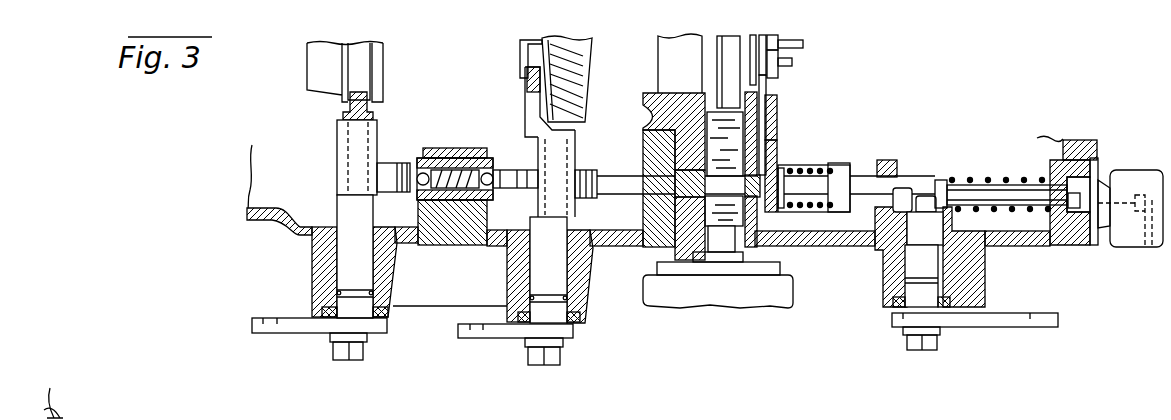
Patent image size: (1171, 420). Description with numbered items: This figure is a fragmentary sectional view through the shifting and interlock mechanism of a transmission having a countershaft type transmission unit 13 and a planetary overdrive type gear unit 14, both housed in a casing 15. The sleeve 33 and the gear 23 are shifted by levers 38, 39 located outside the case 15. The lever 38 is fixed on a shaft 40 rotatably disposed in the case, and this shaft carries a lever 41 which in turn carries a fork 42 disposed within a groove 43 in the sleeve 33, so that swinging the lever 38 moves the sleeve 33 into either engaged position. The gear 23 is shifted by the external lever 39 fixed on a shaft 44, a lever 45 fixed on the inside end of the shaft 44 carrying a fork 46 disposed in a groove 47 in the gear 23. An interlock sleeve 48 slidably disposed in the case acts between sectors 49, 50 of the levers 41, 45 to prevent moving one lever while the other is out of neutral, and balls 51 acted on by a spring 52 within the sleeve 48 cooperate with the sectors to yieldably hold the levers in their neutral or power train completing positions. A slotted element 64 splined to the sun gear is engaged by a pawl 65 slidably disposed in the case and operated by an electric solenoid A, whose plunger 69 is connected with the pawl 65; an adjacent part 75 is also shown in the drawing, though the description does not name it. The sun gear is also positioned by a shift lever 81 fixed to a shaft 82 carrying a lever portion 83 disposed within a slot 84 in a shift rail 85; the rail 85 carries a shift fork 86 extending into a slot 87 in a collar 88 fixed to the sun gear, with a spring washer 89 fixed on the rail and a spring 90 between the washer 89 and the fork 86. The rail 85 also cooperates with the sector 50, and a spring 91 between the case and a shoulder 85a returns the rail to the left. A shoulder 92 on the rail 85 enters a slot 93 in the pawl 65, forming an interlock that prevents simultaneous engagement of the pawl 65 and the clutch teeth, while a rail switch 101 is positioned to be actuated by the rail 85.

The countershaft type transmission unit 13 is at (437, 310).
The planetary overdrive type gear unit 14 is at (1007, 245).
The casing 15 is at (285, 231).
The gear 23 is at (584, 73).
The sleeve 33 is at (322, 86).
The lever 38 is at (299, 330).
The lever 39 is at (507, 336).
The shaft 40 is at (342, 273).
The lever 41 is at (337, 146).
The fork 42 is at (373, 108).
The groove 43 is at (368, 55).
The shaft 44 is at (558, 274).
The lever 45 is at (576, 154).
The fork 46 is at (527, 100).
The groove 47 is at (526, 52).
The interlock sleeve 48 is at (478, 150).
The sector 49 is at (397, 166).
The sector 50 is at (507, 185).
The balls 51 is at (422, 180).
The spring 52 is at (443, 152).
The slotted element 64 is at (727, 36).
The pawl 65 is at (735, 132).
The plunger 69 is at (718, 252).
The sleeve 75 is at (767, 97).
The shift lever 81 is at (1008, 325).
The shaft 82 is at (910, 306).
The lever portion 83 is at (926, 197).
The slot 84 is at (901, 192).
The shift rail 85 is at (1000, 192).
The shoulder 85a is at (952, 188).
The shift fork 86 is at (773, 85).
The slot 87 is at (780, 45).
The collar 88 is at (791, 64).
The spring washer 89 is at (828, 168).
The spring 90 is at (808, 206).
The spring 91 is at (995, 208).
The shoulder 92 is at (677, 198).
The slot 93 is at (721, 184).
The rail switch 101 is at (1137, 172).
The electric solenoid A is at (757, 296).